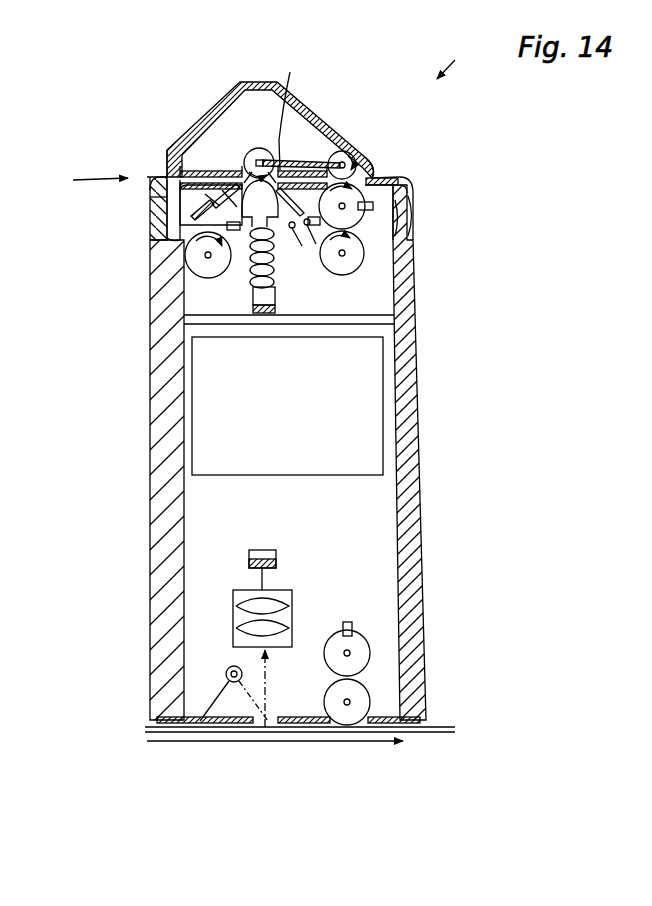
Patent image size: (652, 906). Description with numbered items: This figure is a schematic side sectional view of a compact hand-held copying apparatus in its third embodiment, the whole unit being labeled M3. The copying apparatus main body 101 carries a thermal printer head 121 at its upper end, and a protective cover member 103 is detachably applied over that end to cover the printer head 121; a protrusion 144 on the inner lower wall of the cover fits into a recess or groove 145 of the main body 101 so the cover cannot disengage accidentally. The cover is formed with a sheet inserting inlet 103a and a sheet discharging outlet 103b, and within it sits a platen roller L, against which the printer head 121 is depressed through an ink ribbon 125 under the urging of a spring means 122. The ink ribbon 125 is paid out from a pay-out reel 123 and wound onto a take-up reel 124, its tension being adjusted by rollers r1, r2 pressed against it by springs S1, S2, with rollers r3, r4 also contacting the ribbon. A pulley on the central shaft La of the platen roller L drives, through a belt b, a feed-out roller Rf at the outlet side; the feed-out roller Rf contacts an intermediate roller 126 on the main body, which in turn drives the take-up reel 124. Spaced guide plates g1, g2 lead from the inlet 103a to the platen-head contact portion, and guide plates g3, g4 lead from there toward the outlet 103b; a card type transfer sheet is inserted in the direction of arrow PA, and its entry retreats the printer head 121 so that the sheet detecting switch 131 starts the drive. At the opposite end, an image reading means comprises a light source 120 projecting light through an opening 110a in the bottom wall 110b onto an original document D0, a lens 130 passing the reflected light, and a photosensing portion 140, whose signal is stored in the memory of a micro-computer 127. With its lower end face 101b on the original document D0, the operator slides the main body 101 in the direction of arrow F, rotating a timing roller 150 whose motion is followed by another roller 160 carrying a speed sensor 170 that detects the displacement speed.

The copying apparatus main body 101 is at (422, 366).
The protective cover member 103 is at (183, 180).
The sheet inserting inlet 103a is at (163, 178).
The sheet discharging outlet 103b is at (390, 176).
The intermediate roller 126 is at (358, 160).
The module M3 is at (466, 61).
The guide plate g1 is at (160, 172).
The guide plate g2 is at (150, 218).
The guide plate g3 is at (258, 148).
The guide plate g4 is at (414, 215).
The spring S1 is at (190, 214).
The spring S2 is at (412, 233).
The roller r1 is at (180, 168).
The roller r2 is at (358, 262).
The roller r3 is at (186, 262).
The roller r4 is at (261, 148).
The arrow PA is at (100, 181).
The central shaft La is at (207, 171).
The platen roller L is at (257, 180).
The belt b is at (293, 162).
The feed-out roller Rf is at (340, 152).
The recess or groove 145 is at (396, 190).
The protrusion 144 is at (414, 205).
The take-up reel 124 is at (400, 260).
The ink ribbon 125 is at (307, 226).
The sheet detecting switch 131 is at (200, 272).
The printer head 121 is at (259, 212).
The spring means 122 is at (262, 312).
The pay-out reel 123 is at (250, 272).
The micro-computer 127 is at (370, 418).
The photosensing portion 140 is at (277, 552).
The lens 130 is at (292, 610).
The arrow F is at (263, 737).
The light source 120 is at (230, 721).
The speed sensor 170 is at (353, 626).
The roller 160 is at (360, 650).
The timing roller 150 is at (362, 698).
The opening 110a is at (257, 735).
The lower end face 101b is at (310, 725).
The bottom wall 110b is at (427, 719).
The original document D0 is at (353, 733).